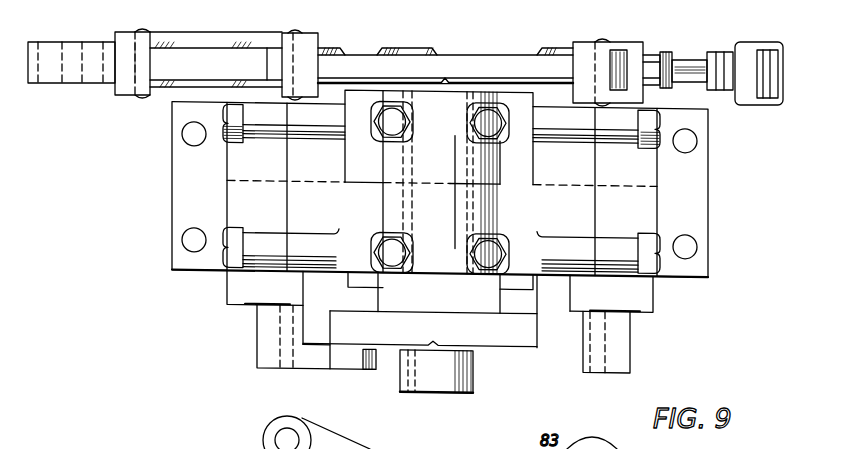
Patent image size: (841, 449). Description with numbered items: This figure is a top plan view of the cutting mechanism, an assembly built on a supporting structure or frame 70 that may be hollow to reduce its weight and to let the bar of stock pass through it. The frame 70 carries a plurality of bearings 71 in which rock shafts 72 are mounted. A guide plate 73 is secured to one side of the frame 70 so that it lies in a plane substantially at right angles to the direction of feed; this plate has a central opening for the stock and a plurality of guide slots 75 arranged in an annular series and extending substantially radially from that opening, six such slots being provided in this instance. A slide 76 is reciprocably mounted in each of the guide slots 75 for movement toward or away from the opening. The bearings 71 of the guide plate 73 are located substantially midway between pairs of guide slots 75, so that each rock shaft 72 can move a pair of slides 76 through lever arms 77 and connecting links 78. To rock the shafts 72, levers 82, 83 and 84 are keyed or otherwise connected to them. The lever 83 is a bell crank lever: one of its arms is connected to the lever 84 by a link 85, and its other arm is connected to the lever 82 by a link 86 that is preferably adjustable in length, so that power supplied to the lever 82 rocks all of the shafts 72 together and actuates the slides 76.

The supporting structure or frame 70 is at (172, 210).
The bearings 71 is at (240, 207).
The rock shafts 72 is at (399, 389).
The guide plate 73 is at (227, 284).
The guide slots 75 is at (350, 285).
The slide 76 is at (323, 292).
The lever arms 77 is at (396, 347).
The connecting links 78 is at (279, 358).
The lever 82 is at (789, 50).
The bell crank lever 83 is at (505, 65).
The lever 84 is at (175, 83).
The link 85 is at (186, 38).
The link 86 is at (705, 55).